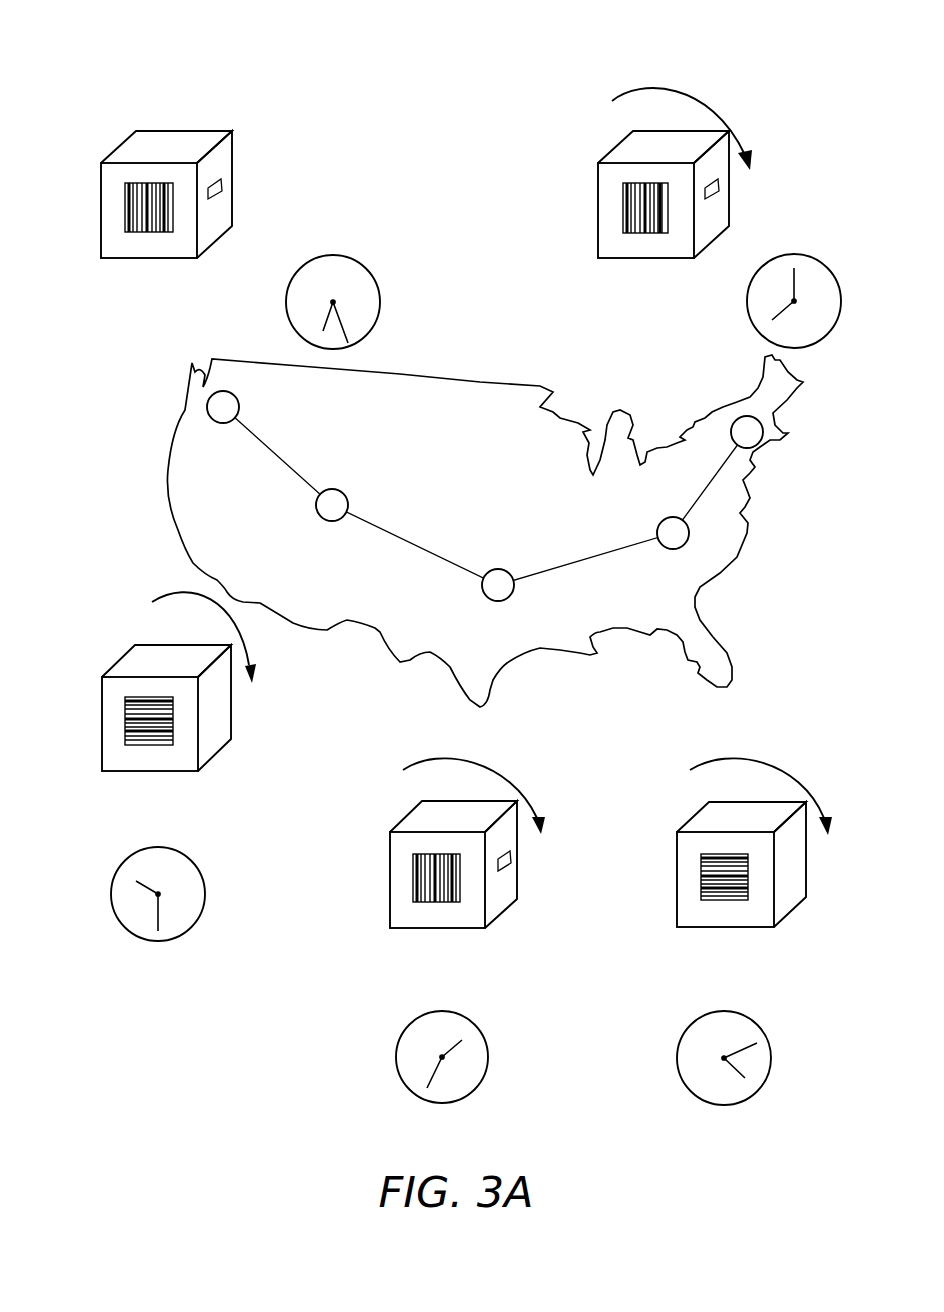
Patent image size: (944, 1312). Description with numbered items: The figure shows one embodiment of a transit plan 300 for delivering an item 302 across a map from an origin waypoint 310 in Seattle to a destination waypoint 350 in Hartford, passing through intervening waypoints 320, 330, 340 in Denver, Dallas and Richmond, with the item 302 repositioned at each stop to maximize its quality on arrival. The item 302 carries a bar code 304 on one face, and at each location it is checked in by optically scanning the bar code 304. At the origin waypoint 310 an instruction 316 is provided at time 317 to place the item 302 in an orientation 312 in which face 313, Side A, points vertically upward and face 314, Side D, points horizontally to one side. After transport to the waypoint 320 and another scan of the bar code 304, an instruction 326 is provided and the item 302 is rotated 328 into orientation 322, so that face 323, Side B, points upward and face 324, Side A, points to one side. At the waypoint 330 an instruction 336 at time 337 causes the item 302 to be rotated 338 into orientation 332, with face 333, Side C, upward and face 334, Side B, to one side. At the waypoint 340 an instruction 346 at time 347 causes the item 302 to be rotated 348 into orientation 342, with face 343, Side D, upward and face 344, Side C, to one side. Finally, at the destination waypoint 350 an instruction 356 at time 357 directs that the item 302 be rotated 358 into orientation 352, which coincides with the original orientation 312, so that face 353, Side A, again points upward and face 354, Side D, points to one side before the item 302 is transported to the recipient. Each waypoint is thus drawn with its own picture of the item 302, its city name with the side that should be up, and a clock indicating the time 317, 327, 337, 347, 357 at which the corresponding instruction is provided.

The transit plan 300 is at (172, 370).
The item 302 is at (188, 62).
The bar code 304 is at (128, 214).
The origin waypoint 310 is at (187, 240).
The orientation 312 is at (118, 148).
The face 313 is at (192, 138).
The face 314 is at (226, 160).
The instruction 316 is at (378, 215).
The time 317 is at (383, 302).
The waypoint 320 is at (209, 630).
The orientation 322 is at (147, 642).
The face 323 is at (138, 658).
The face 324 is at (224, 722).
The instruction 326 is at (111, 809).
The Denver clock / time indicator 327 is at (113, 909).
The rotation 328 is at (152, 600).
The waypoint 330 is at (471, 755).
The orientation 332 is at (502, 915).
The face 333 is at (418, 818).
The face 334 is at (513, 879).
The instruction 336 is at (392, 978).
The time 337 is at (395, 1057).
The rotation 338 is at (475, 756).
The waypoint 340 is at (757, 752).
The orientation 342 is at (790, 915).
The face 343 is at (703, 818).
The face 344 is at (802, 879).
The instruction 346 is at (672, 978).
The time 347 is at (682, 1073).
The rotation 348 is at (762, 756).
The destination waypoint 350 is at (691, 261).
The orientation 352 is at (715, 245).
The face 353 is at (625, 149).
The face 354 is at (727, 178).
The instruction 356 is at (813, 203).
The time 357 is at (748, 314).
The rotation 358 is at (675, 85).